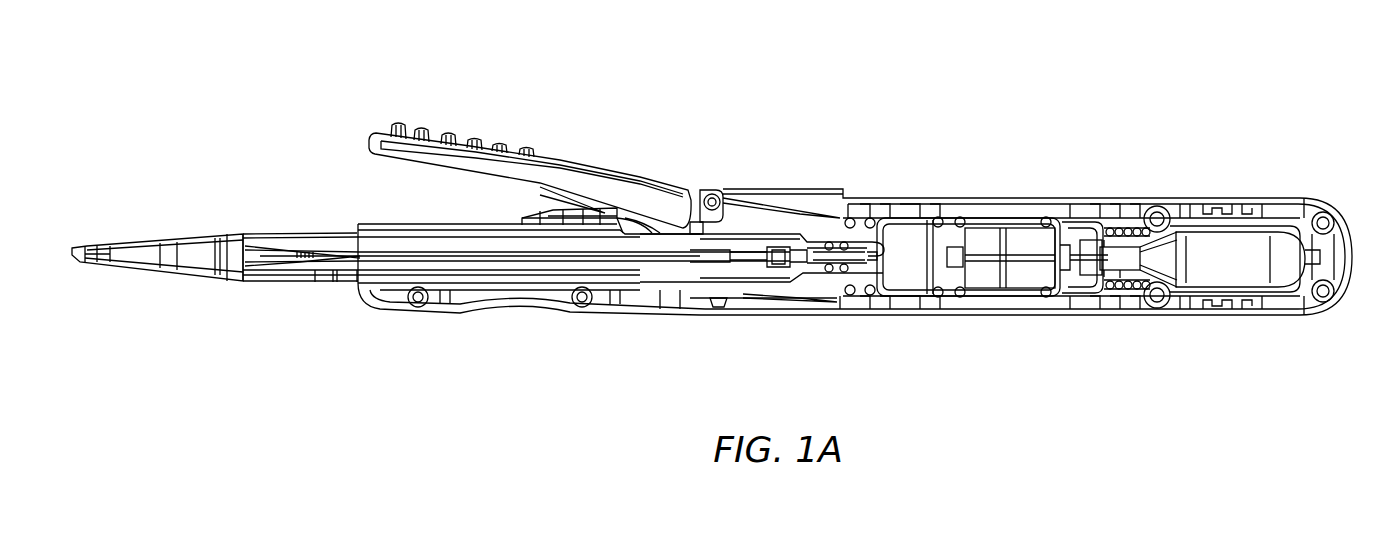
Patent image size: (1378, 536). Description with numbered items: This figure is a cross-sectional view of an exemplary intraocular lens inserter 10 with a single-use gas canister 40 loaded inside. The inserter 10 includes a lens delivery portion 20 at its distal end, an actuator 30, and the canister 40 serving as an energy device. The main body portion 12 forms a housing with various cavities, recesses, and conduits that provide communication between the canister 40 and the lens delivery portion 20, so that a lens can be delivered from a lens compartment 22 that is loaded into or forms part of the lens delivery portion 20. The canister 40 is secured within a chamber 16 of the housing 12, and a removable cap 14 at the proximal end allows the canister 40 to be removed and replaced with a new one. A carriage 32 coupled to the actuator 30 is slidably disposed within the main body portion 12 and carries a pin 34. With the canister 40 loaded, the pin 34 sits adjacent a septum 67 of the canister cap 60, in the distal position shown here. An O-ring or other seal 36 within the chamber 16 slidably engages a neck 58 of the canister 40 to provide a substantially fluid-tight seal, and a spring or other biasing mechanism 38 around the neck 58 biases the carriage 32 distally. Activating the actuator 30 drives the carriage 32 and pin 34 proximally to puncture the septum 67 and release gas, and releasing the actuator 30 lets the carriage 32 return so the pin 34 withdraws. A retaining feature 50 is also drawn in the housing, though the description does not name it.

The intraocular lens inserter 10 is at (771, 128).
The main body portion 12 is at (882, 318).
The removable cap 14 is at (1330, 313).
The chamber 16 is at (1285, 298).
The lens delivery portion 20 is at (257, 190).
The lens compartment 22 is at (223, 232).
The actuator 30 is at (526, 136).
The carriage 32 is at (1031, 216).
The pin 34 is at (1088, 295).
The seal 36 is at (1112, 222).
The biasing mechanism 38 is at (1136, 226).
The canister 40 is at (1237, 293).
The upper retaining clip 50 is at (1217, 222).
The neck 58 is at (1128, 294).
The cap 60 is at (1090, 222).
The septum 67 is at (1131, 292).